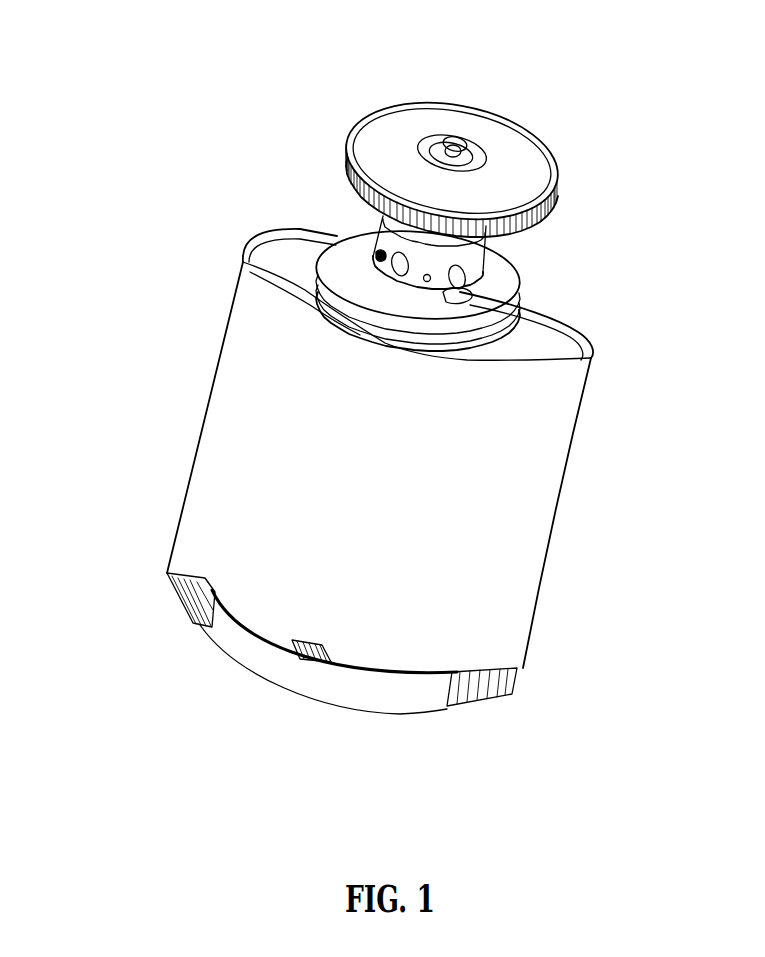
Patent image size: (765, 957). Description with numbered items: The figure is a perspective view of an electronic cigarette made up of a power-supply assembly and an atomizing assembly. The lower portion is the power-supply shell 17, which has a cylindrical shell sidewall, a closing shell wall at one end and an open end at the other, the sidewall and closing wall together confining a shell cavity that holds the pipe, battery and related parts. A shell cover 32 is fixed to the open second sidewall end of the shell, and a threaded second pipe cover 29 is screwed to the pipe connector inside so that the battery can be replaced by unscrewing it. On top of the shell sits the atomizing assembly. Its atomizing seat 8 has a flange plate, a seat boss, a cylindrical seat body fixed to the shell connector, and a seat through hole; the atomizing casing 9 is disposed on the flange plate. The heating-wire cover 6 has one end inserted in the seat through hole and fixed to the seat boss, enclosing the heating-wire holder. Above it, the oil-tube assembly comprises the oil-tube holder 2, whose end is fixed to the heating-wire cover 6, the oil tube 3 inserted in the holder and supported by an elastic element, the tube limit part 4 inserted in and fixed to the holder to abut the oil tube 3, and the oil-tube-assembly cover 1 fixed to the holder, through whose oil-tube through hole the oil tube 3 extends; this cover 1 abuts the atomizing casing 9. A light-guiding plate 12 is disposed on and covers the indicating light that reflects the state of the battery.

The oil-tube-assembly cover 1 is at (510, 173).
The oil-tube holder 2 is at (484, 143).
The oil tube 3 is at (455, 138).
The tube limit part 4 is at (473, 148).
The heating-wire cover 6 is at (440, 260).
The atomizing seat 8 is at (367, 240).
The atomizing casing 9 is at (360, 243).
The light-guiding plate 12 is at (470, 290).
The power-supply shell 17 is at (267, 353).
The second pipe cover 29 is at (190, 585).
The shell cover 32 is at (400, 697).